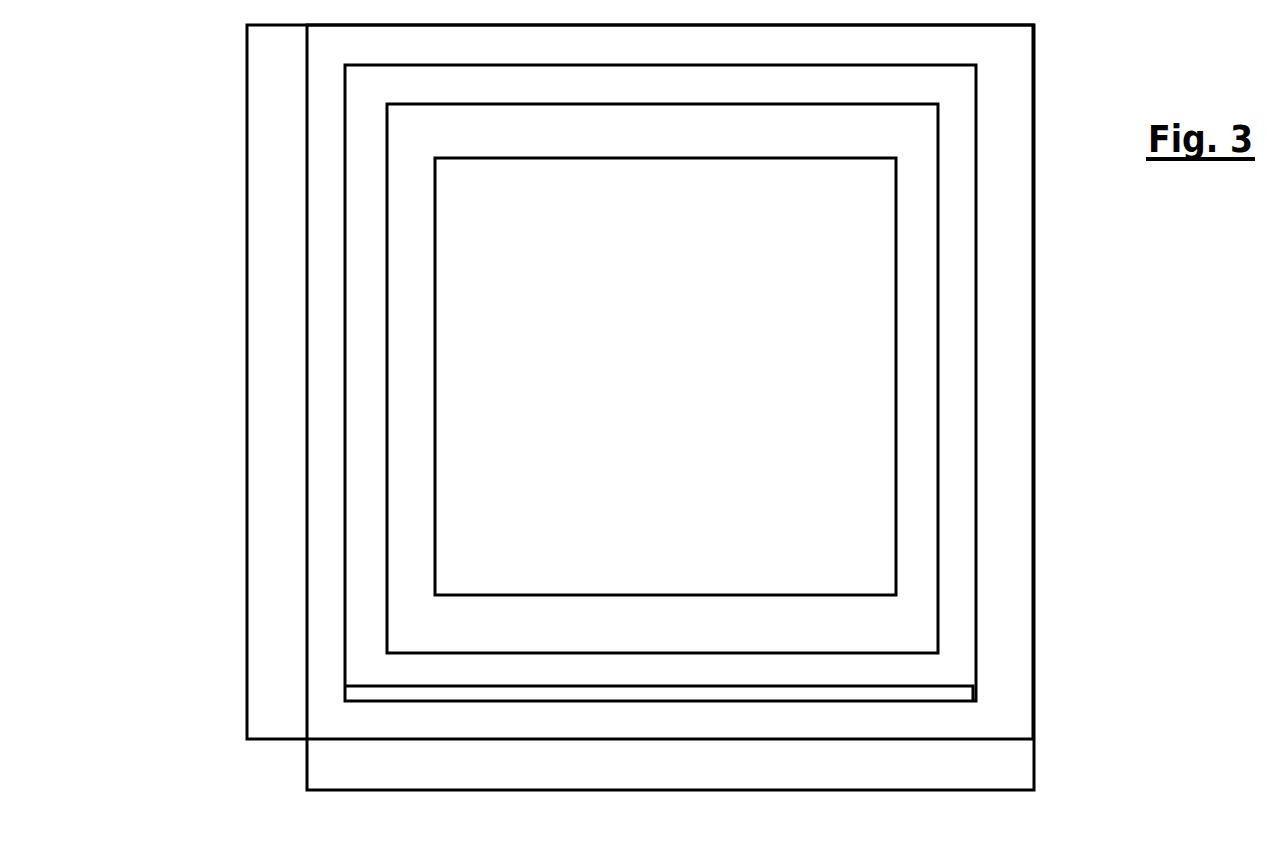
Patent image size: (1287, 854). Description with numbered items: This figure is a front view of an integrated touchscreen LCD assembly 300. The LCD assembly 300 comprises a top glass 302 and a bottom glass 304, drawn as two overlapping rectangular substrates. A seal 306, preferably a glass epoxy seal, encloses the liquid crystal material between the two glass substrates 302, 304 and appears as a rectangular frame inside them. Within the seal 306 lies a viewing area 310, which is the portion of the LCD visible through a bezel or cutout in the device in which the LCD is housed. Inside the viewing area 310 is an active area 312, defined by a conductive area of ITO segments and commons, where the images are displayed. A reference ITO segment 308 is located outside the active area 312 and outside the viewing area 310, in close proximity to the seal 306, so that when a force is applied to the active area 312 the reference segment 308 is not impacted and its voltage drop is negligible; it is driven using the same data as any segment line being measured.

The LCD assembly 300 is at (163, 145).
The top glass 302 is at (247, 565).
The bottom glass 304 is at (1034, 768).
The seal 306 is at (976, 572).
The reference ITO segment 308 is at (960, 686).
The viewing area 310 is at (707, 635).
The active area 312 is at (699, 390).